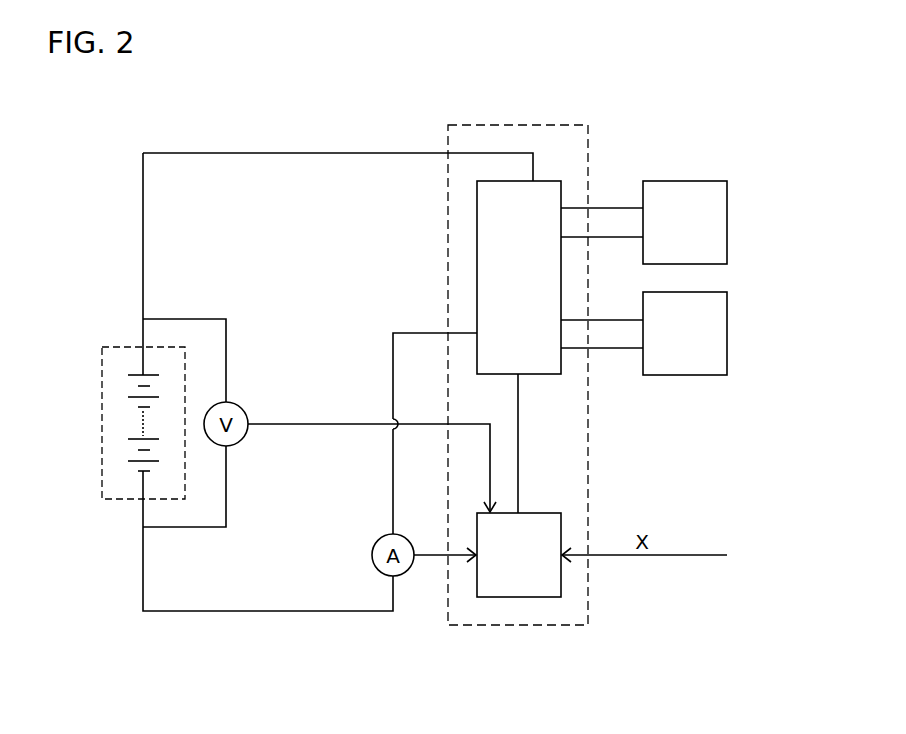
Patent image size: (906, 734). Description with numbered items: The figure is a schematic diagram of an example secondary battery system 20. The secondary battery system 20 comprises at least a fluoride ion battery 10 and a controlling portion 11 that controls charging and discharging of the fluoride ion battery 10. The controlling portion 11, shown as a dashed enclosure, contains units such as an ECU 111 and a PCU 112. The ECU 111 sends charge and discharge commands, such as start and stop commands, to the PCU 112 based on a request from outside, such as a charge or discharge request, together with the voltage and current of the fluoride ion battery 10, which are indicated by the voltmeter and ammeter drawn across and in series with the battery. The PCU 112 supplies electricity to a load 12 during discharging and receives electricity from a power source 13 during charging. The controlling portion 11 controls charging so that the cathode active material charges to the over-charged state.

The fluoride ion battery 10 is at (112, 347).
The controlling portion 11 is at (588, 458).
The load 12 is at (712, 223).
The power source 13 is at (712, 333).
The secondary battery system 20 is at (695, 110).
The ECU (Electronic Control Unit) 111 is at (537, 580).
The PCU (Power Control Unit) 112 is at (538, 357).